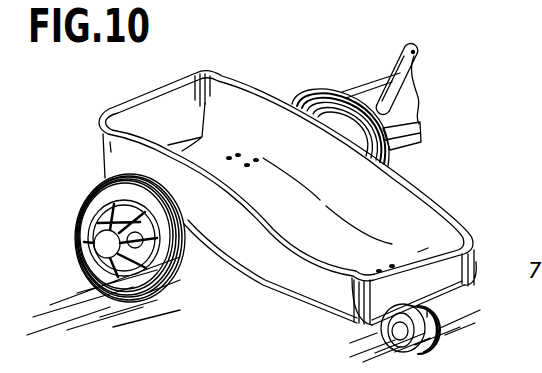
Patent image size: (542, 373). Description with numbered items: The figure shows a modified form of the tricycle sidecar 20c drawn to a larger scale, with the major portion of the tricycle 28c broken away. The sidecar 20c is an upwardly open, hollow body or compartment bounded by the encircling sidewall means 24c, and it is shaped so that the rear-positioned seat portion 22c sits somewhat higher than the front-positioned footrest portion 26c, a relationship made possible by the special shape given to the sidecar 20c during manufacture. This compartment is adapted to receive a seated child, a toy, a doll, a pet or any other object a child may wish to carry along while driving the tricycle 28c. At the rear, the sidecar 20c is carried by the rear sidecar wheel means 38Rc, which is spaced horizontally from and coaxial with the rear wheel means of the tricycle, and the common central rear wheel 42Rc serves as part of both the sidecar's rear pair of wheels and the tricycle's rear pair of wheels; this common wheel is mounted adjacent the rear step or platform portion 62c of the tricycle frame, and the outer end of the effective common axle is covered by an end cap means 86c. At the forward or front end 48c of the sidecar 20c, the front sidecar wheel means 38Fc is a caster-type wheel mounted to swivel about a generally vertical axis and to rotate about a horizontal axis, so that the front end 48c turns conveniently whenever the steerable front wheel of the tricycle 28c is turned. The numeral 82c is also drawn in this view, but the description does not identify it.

The tricycle sidecar 20c is at (186, 336).
The seat portion 22c is at (213, 151).
The sidewall means 24c is at (403, 190).
The footrest portion 26c is at (380, 250).
The tricycle 28c is at (435, 73).
The rear step or platform portion 62c is at (413, 107).
The common central rear wheel 42Rc is at (420, 124).
The rear sidecar wheel means 38Rc is at (68, 221).
The tire 82c is at (147, 290).
The end cap means 86c is at (96, 262).
The front end 48c is at (427, 282).
The front sidecar wheel means 38Fc is at (452, 340).